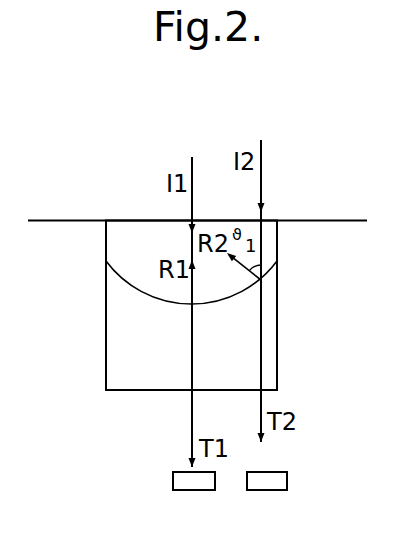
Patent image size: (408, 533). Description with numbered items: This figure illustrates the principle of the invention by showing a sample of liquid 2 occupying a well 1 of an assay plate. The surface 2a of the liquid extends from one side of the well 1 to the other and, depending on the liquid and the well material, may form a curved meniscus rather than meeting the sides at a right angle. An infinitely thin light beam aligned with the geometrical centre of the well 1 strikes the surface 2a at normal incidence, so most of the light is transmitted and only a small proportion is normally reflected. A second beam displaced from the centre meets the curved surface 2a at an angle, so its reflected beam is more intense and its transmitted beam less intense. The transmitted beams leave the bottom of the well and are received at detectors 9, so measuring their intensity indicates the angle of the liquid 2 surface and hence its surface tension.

The well 1 is at (314, 243).
The liquid sample 2 is at (82, 333).
The liquid surface 2a is at (118, 279).
The detector 9 is at (173, 481).